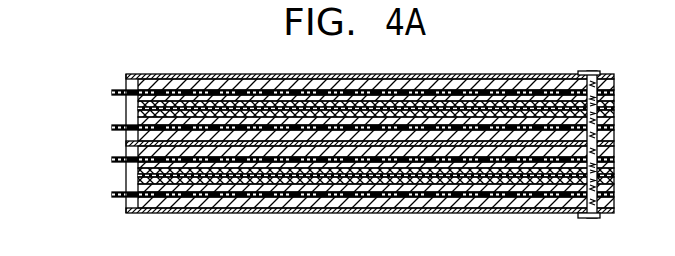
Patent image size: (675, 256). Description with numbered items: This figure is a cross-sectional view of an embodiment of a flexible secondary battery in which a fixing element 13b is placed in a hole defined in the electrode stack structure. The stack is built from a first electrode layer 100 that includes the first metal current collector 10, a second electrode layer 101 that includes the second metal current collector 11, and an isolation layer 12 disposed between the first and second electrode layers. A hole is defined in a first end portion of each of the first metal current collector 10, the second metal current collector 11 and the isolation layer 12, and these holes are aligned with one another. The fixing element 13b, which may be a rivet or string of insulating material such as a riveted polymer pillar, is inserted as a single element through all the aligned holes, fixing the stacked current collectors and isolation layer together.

The first metal current collector 10 is at (138, 128).
The first electrode layer 100 is at (140, 108).
The second metal current collector 11 is at (126, 79).
The second electrode layer 101 is at (126, 83).
The isolation layer 12 is at (138, 97).
The fixing element 13b is at (593, 70).